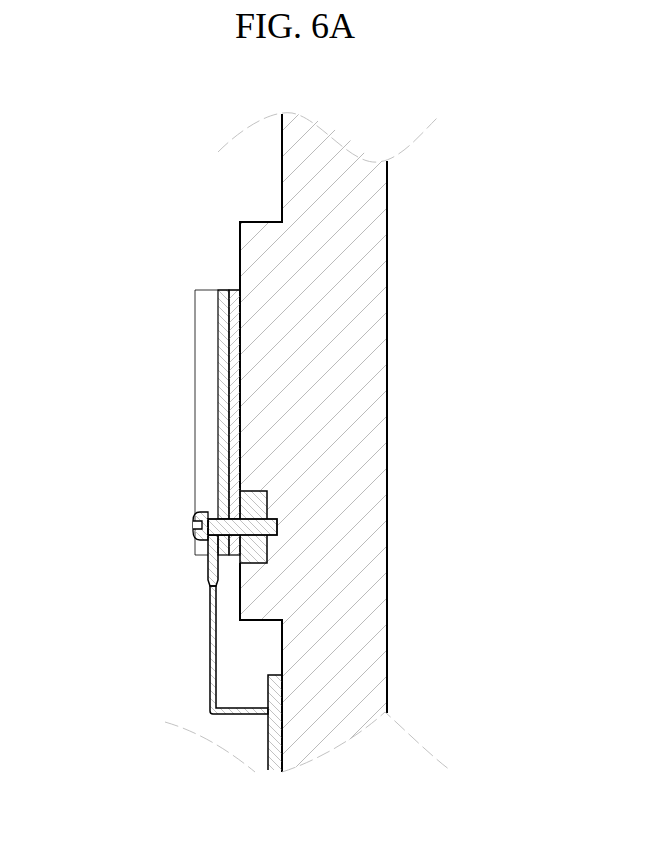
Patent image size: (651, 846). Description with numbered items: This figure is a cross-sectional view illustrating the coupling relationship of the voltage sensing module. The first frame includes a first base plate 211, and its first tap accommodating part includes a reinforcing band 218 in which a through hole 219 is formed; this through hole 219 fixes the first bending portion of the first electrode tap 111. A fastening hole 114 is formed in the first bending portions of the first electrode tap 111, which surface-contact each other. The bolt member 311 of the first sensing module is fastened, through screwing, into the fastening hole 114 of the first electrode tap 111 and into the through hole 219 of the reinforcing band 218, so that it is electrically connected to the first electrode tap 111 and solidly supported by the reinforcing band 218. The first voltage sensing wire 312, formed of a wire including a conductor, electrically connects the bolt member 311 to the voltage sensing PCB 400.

The first base plate 211 is at (357, 243).
The reinforcing band 218 is at (262, 242).
The through hole 219 is at (252, 492).
The first electrode tap 111 is at (225, 370).
The fastening hole 114 is at (207, 507).
The bolt member 311 is at (208, 558).
The first voltage sensing wire 312 is at (210, 641).
The voltage sensing PCB 400 is at (268, 741).